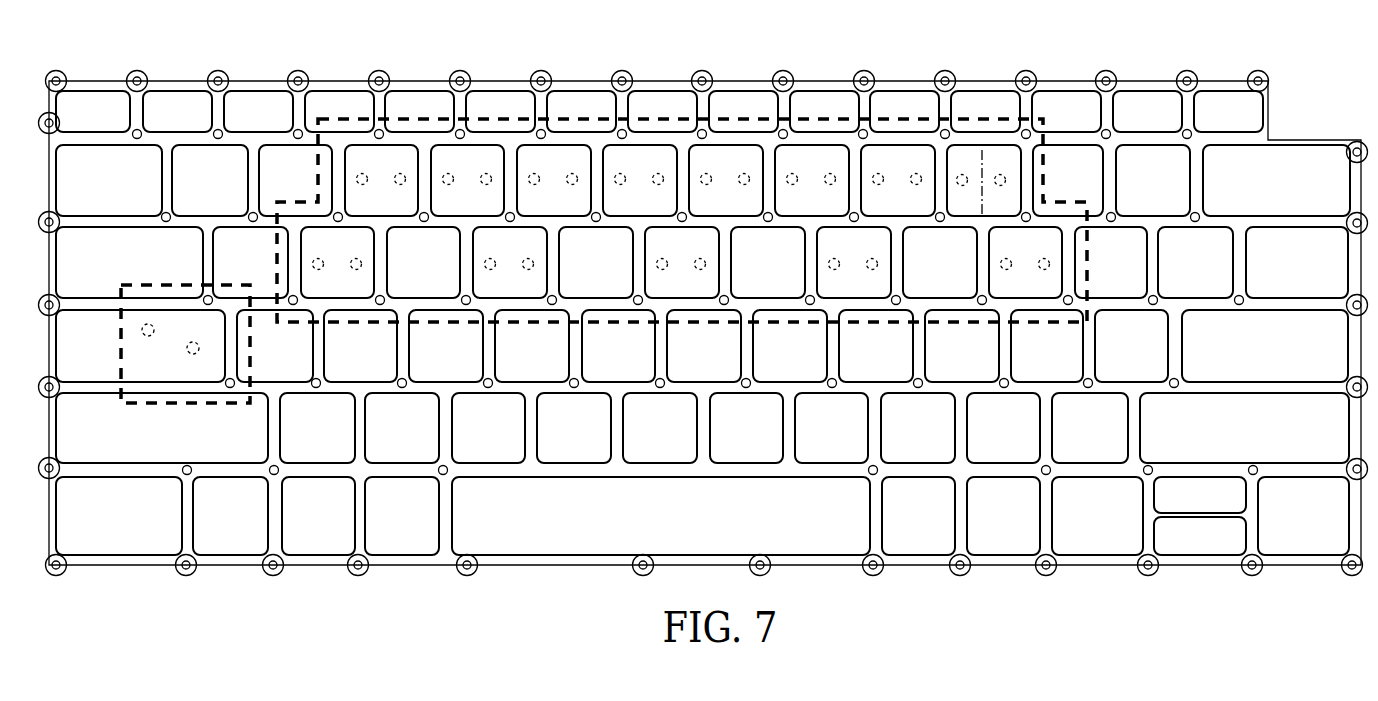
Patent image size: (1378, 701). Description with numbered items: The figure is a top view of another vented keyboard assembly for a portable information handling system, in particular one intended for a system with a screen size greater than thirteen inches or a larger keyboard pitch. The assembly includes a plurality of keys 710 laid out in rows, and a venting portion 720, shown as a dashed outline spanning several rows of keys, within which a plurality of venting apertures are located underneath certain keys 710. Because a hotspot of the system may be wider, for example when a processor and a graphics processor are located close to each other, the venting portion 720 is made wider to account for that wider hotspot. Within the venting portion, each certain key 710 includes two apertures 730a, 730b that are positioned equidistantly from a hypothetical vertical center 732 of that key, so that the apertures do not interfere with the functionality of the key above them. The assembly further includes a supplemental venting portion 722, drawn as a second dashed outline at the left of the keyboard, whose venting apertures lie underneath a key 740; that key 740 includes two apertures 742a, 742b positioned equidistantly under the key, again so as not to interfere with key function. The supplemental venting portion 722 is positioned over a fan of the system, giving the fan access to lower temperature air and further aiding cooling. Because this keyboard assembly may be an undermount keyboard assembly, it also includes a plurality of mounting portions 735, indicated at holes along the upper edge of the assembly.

The keys 710 is at (944, 167).
The venting portion 720 is at (502, 120).
The supplemental venting portion 722 is at (158, 407).
The aperture 730a is at (966, 175).
The aperture 730b is at (999, 175).
The hypothetical vertical center 732 is at (981, 197).
The mounting portions 735 is at (294, 133).
The key 740 is at (108, 383).
The aperture 742a is at (155, 322).
The aperture 742b is at (196, 354).